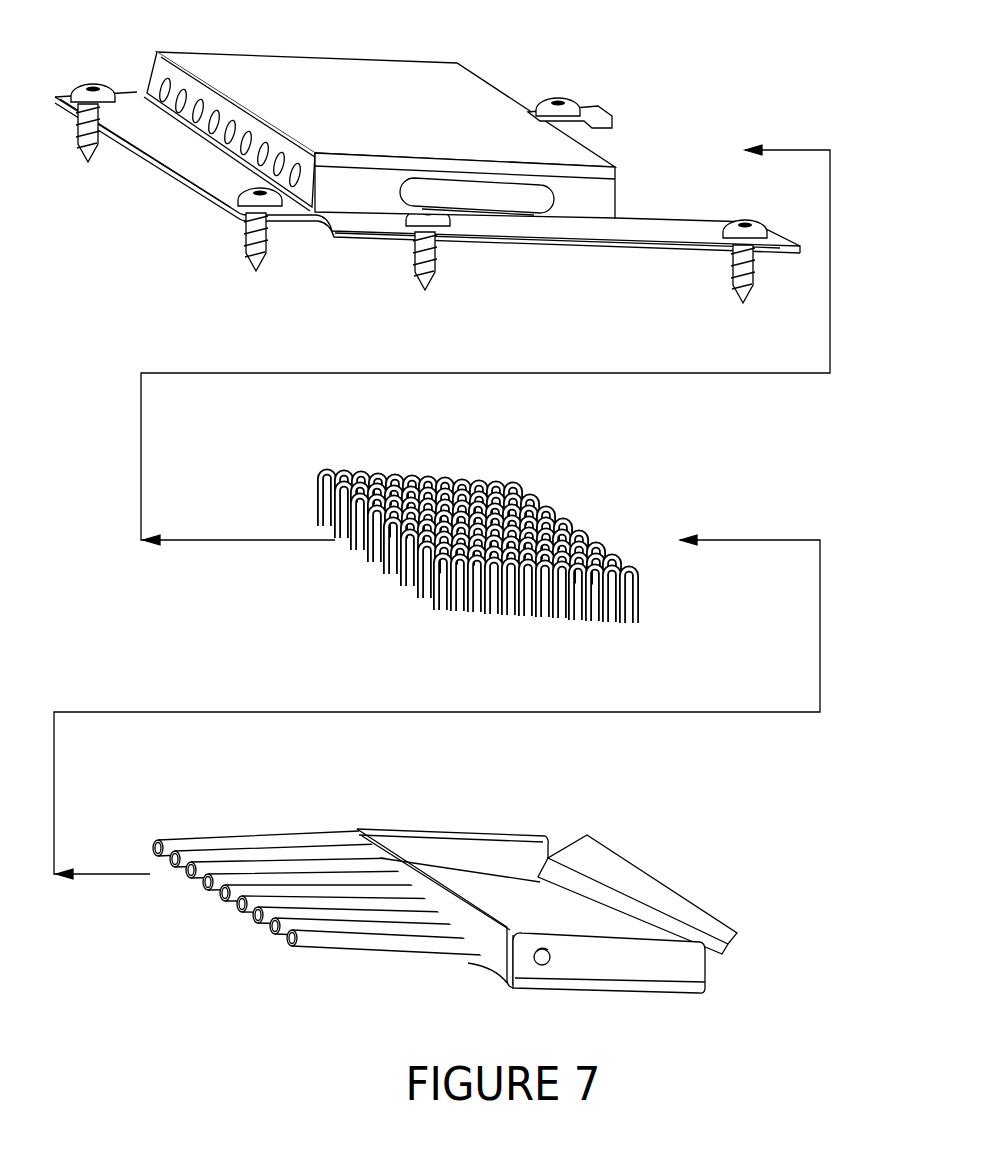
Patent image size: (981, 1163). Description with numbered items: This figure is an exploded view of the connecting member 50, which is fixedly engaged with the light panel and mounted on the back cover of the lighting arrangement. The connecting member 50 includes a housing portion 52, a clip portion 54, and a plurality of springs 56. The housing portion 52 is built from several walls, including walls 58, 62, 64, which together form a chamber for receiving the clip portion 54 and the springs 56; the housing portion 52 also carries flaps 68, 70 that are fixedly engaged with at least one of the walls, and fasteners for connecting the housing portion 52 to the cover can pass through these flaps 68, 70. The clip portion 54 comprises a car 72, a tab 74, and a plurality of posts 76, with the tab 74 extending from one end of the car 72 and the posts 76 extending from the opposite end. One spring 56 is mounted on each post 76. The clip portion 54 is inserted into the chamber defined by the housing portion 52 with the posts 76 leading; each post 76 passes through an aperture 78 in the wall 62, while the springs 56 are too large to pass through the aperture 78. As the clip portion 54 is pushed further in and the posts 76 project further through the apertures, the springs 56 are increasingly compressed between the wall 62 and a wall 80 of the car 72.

The connecting member 50 is at (442, 543).
The housing portion 52 is at (430, 180).
The clip portion 54 is at (479, 911).
The spring 56 is at (668, 478).
The wall 58 is at (410, 112).
The wall 62 is at (427, 215).
The wall 64 is at (600, 200).
The flap 68 is at (167, 147).
The flap 70 is at (518, 228).
The car 72 is at (650, 965).
The tab 74 is at (733, 947).
The post 76 is at (368, 950).
The aperture 78 is at (300, 180).
The wall 80 is at (403, 868).